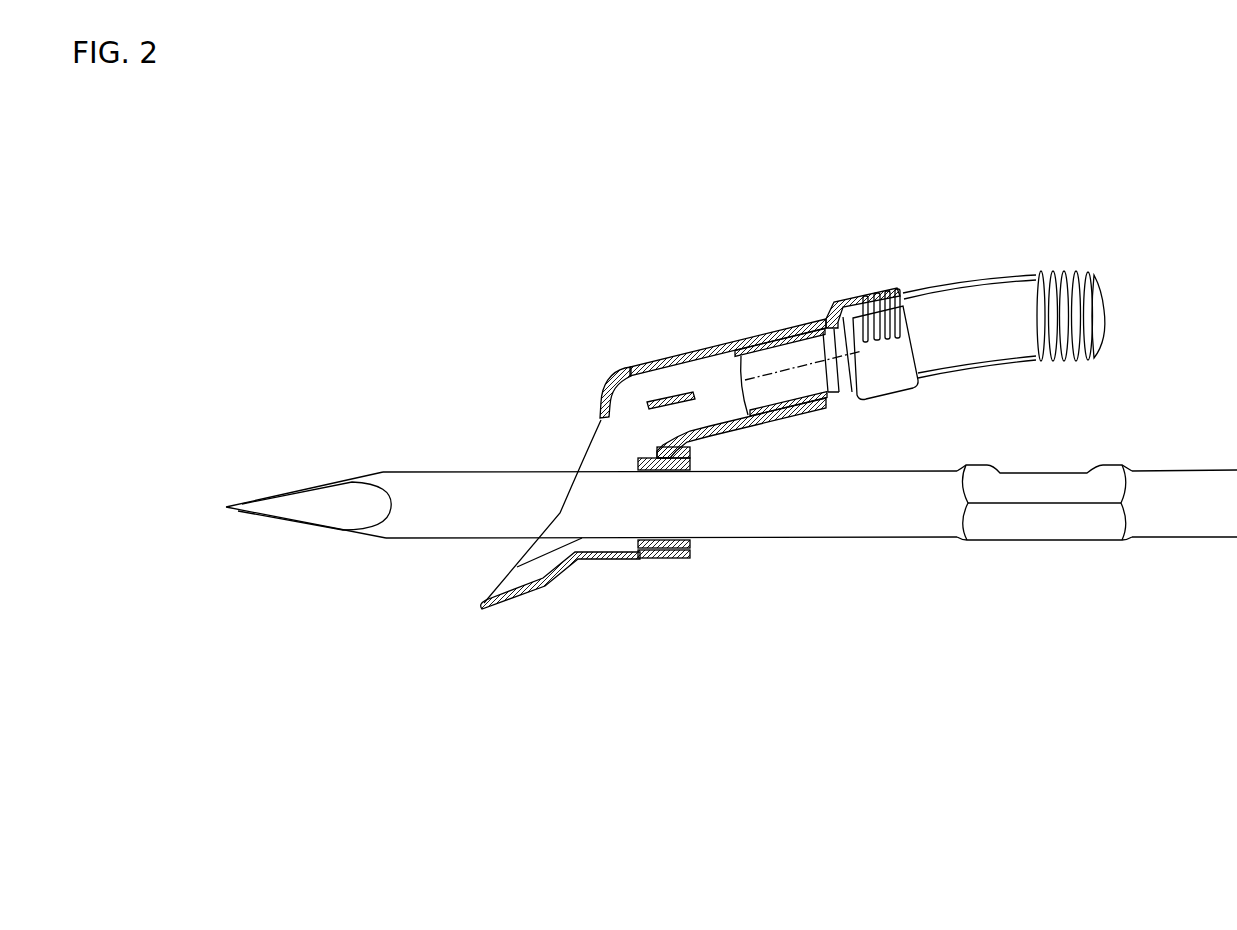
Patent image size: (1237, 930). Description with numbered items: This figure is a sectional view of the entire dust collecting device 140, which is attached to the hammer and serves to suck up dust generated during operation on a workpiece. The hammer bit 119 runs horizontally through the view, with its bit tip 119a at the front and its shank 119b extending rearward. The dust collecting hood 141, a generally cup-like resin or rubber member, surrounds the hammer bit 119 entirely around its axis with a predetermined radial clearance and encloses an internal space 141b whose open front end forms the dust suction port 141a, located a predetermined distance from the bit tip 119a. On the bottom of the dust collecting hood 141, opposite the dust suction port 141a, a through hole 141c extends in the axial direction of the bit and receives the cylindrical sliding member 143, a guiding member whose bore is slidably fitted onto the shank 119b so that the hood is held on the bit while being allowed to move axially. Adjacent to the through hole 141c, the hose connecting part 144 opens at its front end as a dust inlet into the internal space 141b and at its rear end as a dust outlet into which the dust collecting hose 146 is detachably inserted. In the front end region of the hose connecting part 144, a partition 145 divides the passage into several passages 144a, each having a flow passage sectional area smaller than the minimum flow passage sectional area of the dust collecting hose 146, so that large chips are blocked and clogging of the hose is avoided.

The hammer bit 119 is at (974, 552).
The bit tip 119a is at (352, 500).
The shank 119b is at (823, 520).
The dust collecting device 140 is at (906, 236).
The dust collecting hood 141 is at (547, 592).
The dust suction port 141a is at (518, 560).
The internal space 141b is at (612, 447).
The through hole 141c is at (643, 558).
The cylindrical sliding member 143 is at (692, 550).
The hose connecting part 144 is at (737, 340).
The passages 144a is at (650, 426).
The partition 145 is at (668, 394).
The dust collecting hose 146 is at (1005, 270).